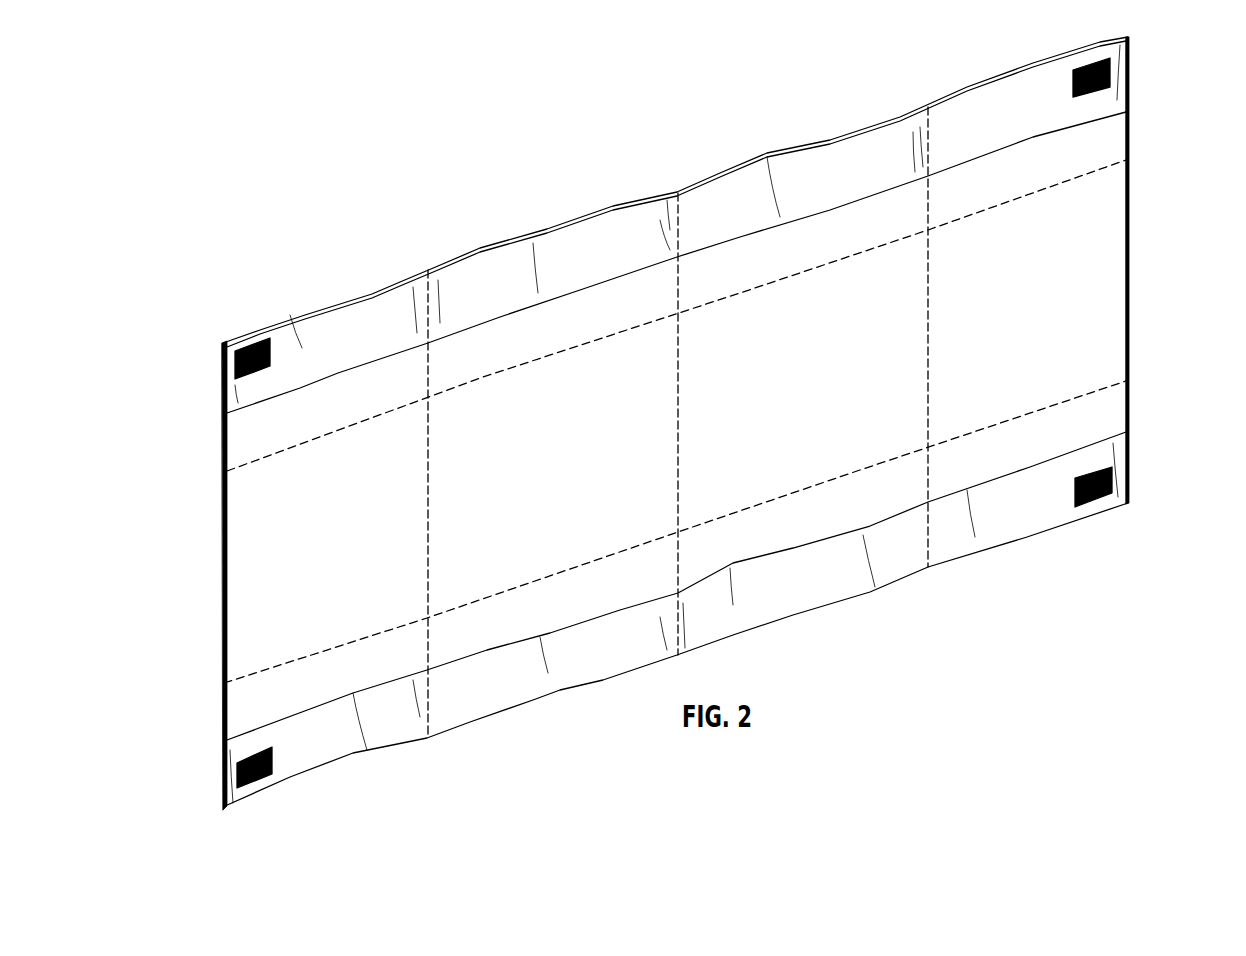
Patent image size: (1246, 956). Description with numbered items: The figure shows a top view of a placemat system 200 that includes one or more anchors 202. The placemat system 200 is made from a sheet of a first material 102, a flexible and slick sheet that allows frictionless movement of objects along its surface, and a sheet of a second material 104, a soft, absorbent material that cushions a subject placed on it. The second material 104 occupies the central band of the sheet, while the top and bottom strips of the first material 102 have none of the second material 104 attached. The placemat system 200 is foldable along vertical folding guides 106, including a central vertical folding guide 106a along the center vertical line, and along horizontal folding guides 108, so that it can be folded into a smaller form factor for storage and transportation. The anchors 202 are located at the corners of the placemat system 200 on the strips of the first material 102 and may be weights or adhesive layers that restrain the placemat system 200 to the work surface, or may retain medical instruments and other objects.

The placemat system 200 is at (618, 109).
The first material 102 is at (993, 103).
The second material 104 is at (1100, 277).
The vertical folding guide 106 is at (428, 366).
The central vertical folding guide 106a is at (677, 282).
The horizontal folding guide 108 is at (868, 248).
The anchor 202 is at (255, 345).